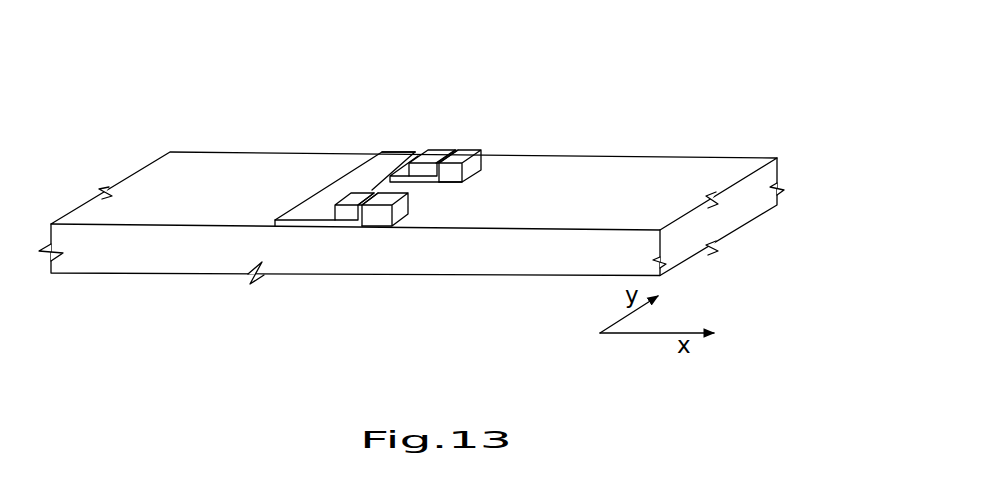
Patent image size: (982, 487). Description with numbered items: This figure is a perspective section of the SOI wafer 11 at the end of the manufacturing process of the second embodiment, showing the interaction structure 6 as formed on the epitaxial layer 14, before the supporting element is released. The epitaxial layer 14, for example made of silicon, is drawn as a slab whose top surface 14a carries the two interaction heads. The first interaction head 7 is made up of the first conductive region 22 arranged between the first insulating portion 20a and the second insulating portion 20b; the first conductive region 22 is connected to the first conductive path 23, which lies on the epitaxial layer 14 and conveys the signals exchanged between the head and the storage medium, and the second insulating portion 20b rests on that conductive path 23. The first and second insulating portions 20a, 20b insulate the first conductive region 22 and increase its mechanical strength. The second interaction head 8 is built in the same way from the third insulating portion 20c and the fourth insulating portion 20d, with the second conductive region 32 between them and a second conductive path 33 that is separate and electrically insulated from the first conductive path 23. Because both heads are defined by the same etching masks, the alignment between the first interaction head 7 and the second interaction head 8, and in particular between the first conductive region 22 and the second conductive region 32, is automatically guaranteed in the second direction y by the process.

The interaction structure 6 is at (394, 143).
The first interaction head 7 is at (396, 253).
The second interaction head 8 is at (488, 143).
The SOI wafer 11 is at (812, 192).
The epitaxial layer 14 is at (447, 196).
The top surface 14a is at (745, 153).
The first insulating portion 20a is at (402, 212).
The second insulating portion 20b is at (343, 214).
The third insulating portion 20c is at (431, 151).
The fourth insulating portion 20d is at (473, 167).
The first conductive region 22 is at (360, 224).
The first conductive path 23 is at (316, 162).
The second conductive region 32 is at (448, 152).
The second conductive path 33 is at (406, 170).